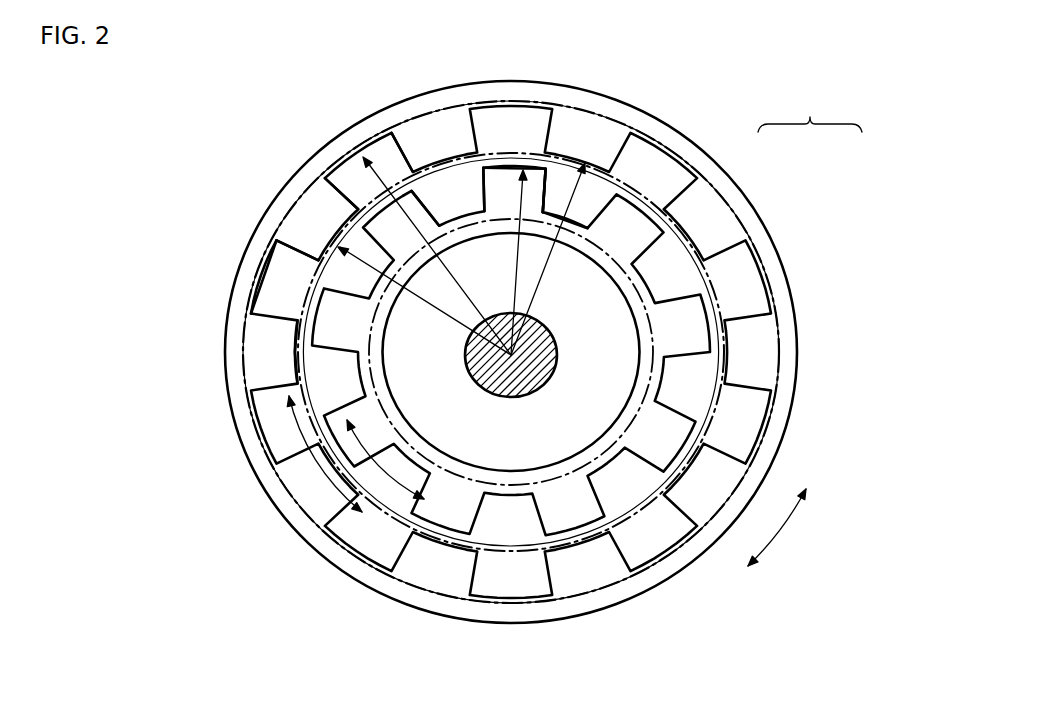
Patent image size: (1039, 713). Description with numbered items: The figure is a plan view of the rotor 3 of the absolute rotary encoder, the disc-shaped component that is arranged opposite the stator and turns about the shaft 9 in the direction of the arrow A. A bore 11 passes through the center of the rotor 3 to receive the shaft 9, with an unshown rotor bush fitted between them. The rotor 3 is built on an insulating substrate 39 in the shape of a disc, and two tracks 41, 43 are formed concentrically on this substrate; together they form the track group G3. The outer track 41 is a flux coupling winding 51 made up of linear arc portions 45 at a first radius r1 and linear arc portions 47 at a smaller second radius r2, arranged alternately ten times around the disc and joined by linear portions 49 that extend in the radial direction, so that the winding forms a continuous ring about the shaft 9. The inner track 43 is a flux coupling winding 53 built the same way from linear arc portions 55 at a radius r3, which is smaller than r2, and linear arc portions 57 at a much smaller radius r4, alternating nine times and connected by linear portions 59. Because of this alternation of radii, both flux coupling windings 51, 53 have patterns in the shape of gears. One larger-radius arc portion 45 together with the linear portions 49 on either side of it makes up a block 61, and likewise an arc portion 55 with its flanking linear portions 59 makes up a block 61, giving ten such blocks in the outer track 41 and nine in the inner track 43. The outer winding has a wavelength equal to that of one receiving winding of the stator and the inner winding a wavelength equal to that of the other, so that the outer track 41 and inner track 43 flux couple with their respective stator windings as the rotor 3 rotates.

The rotor 3 is at (910, 59).
The shaft 9 is at (510, 398).
The bore 11 is at (637, 332).
The insulating substrate 39 is at (800, 354).
The track 41 is at (705, 222).
The track 43 is at (682, 268).
The track group G3 is at (810, 111).
The linear arc portions 45 is at (343, 148).
The linear arc portions 47 is at (342, 237).
The linear portions 49 is at (338, 197).
The flux coupling winding 51 is at (404, 140).
The flux coupling winding 53 is at (428, 200).
The linear arc portions 55 is at (518, 160).
The linear arc portions 57 is at (590, 150).
The linear portions 59 is at (494, 160).
The block 61 is at (502, 178).
The first radius r1 is at (472, 298).
The second radius r2 is at (452, 320).
The first radius r3 is at (513, 252).
The second radius r4 is at (550, 272).
The arrow A is at (796, 538).